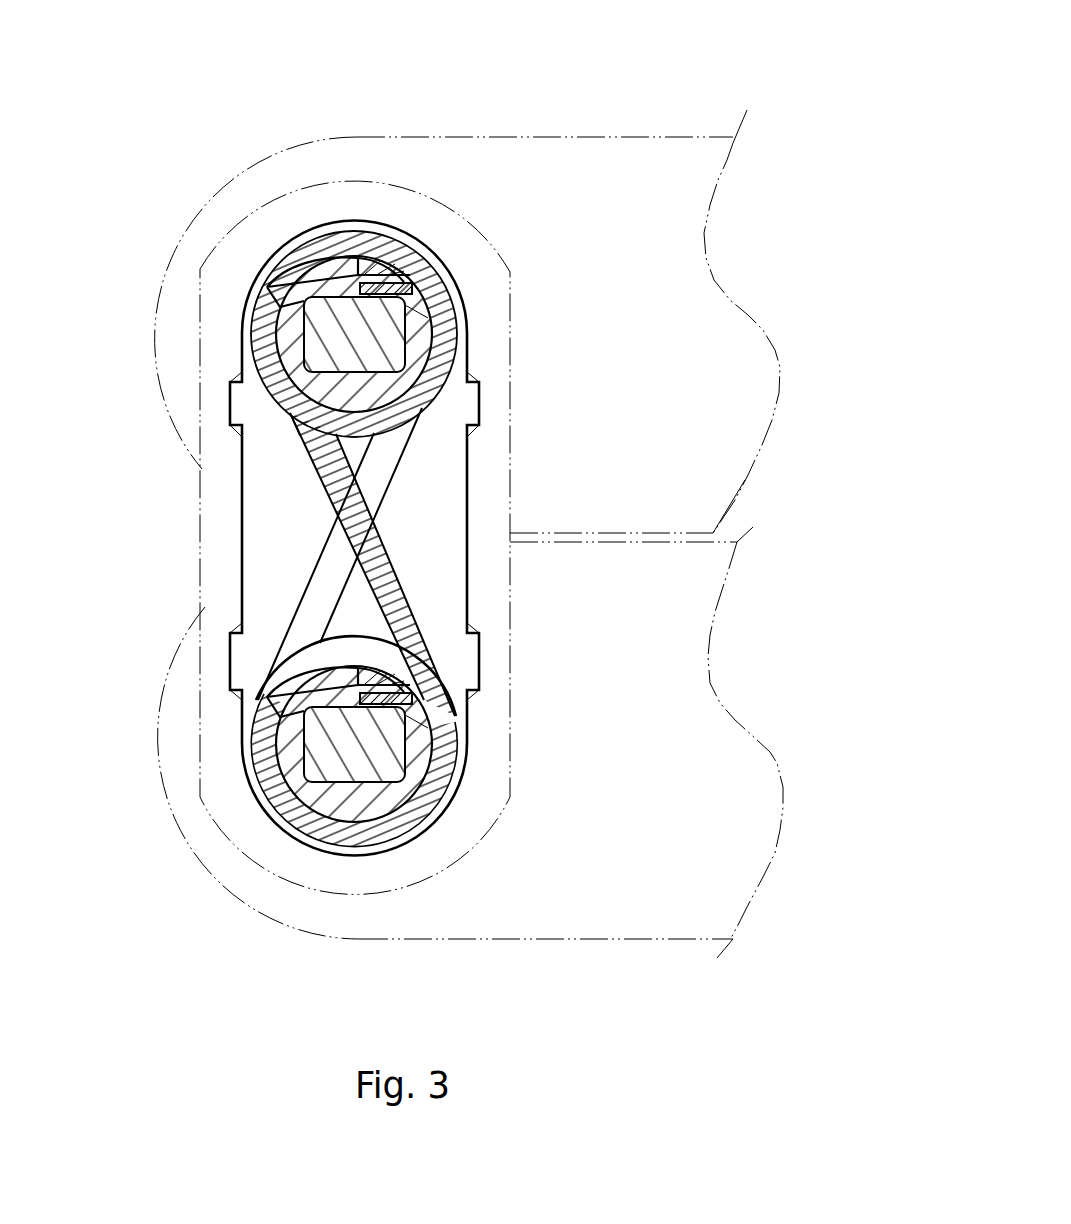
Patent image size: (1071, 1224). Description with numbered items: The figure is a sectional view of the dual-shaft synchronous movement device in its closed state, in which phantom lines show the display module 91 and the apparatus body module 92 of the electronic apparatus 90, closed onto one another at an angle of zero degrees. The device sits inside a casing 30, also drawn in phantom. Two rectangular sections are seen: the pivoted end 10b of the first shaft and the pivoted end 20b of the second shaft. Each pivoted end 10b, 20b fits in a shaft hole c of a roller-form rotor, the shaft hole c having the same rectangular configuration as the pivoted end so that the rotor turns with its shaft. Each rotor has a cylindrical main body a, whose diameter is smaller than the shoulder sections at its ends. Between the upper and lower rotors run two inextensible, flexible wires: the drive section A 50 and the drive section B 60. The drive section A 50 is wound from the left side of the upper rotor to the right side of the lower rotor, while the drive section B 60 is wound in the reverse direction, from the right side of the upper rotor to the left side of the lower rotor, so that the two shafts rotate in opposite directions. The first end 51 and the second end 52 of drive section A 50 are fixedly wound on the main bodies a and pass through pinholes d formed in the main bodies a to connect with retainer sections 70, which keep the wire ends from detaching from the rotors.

The electronic apparatus 90 is at (650, 117).
The display module 91 is at (547, 143).
The apparatus body module 92 is at (595, 910).
The casing 30 is at (197, 345).
The first end 51 is at (293, 290).
The second end 52 is at (320, 667).
The retainer section 70 is at (378, 266).
The pivoted end 10b is at (368, 333).
The pivoted end 20b is at (392, 745).
The drive section A 50 is at (375, 553).
The drive section B 60 is at (338, 567).
The main body a is at (293, 432).
The shaft hole c is at (360, 378).
The pinhole d is at (415, 302).